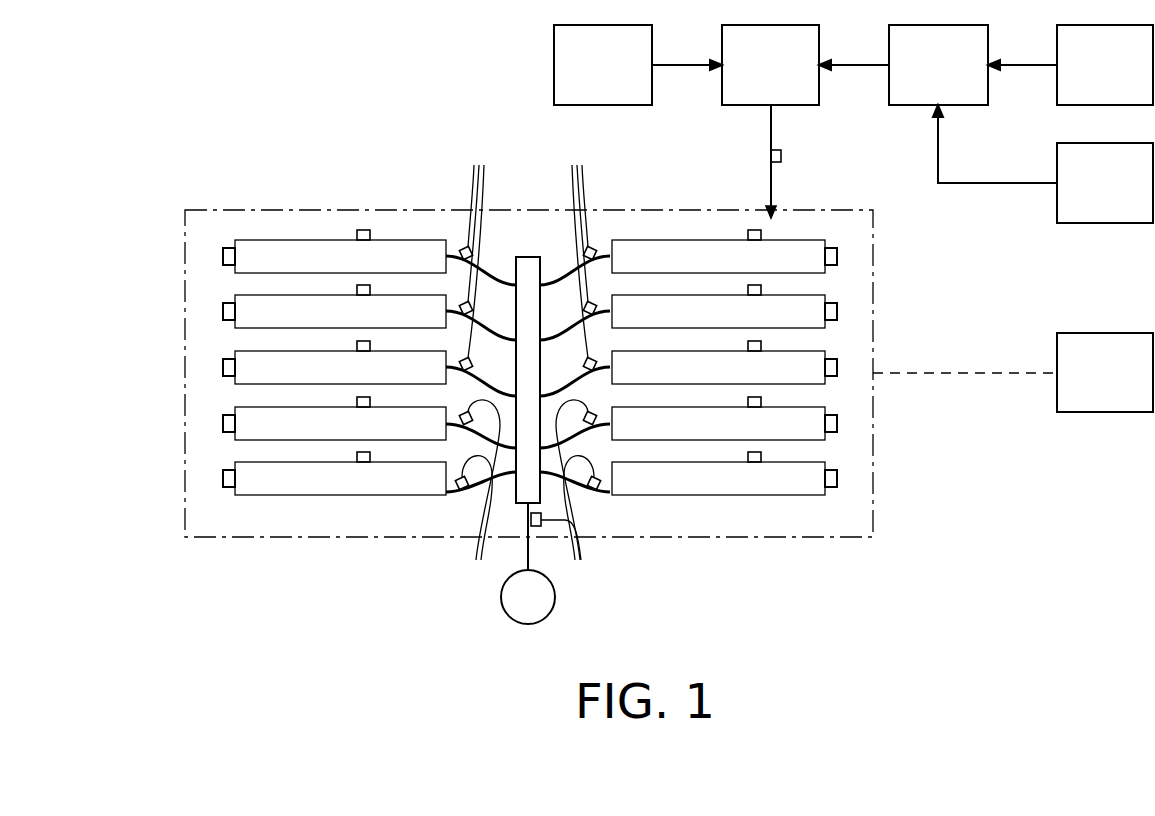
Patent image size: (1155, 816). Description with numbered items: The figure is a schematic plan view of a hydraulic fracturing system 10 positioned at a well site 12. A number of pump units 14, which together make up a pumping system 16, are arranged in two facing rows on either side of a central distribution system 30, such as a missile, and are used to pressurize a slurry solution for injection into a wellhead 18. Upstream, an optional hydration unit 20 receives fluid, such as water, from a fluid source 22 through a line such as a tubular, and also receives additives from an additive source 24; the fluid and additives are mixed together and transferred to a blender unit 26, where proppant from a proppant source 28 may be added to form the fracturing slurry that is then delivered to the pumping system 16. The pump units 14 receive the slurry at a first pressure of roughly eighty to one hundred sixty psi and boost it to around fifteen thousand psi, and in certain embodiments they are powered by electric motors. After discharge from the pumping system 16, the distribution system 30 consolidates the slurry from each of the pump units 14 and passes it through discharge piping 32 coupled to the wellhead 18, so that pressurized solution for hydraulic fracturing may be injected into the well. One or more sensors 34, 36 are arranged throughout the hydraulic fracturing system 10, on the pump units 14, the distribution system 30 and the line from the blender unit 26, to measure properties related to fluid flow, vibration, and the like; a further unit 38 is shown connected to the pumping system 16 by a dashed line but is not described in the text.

The hydraulic fracturing system 10 is at (153, 86).
The well site 12 is at (190, 647).
The pump unit 14 is at (311, 270).
The pumping system 16 is at (196, 203).
The wellhead 18 is at (514, 610).
The hydration unit 20 is at (924, 78).
The fluid source 22 is at (1091, 78).
The additive source 24 is at (1091, 196).
The blender unit 26 is at (756, 78).
The proppant source 28 is at (589, 78).
The distribution system 30 is at (527, 262).
The discharge piping 32 is at (527, 546).
The sensor 34 is at (938, 487).
The sensor 36 is at (223, 257).
The external device 38 is at (1091, 386).